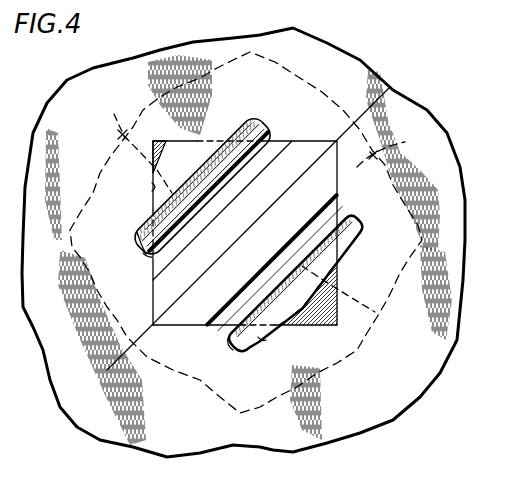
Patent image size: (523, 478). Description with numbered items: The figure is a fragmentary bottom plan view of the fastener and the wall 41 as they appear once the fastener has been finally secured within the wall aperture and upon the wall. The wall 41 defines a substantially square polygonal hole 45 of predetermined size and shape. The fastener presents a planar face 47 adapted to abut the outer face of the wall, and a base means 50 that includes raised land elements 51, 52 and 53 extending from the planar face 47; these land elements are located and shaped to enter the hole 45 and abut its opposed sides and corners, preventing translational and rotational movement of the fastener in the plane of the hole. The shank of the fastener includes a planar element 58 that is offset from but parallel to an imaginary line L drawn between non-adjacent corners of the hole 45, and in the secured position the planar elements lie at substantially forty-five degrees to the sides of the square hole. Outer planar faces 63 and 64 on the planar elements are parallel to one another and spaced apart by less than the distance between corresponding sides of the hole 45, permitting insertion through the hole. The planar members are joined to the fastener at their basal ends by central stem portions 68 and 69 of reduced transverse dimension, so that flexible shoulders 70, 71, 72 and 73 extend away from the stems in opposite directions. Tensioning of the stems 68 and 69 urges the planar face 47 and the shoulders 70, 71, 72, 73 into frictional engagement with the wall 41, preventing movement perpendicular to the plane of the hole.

The wall 41 is at (410, 373).
The polygonal hole 45 is at (150, 187).
The planar face 47 is at (252, 232).
The base means 50 is at (176, 280).
The raised land element 51 is at (270, 197).
The raised land element 52 is at (180, 169).
The raised land element 53 is at (323, 310).
The planar element 58 is at (203, 167).
The outer planar face 63 is at (134, 229).
The outer planar face 64 is at (260, 339).
The central stem portion 68 is at (135, 142).
The central stem portion 69 is at (361, 295).
The flexible shoulder 70 is at (255, 122).
The flexible shoulder 71 is at (143, 252).
The flexible shoulder 72 is at (357, 219).
The flexible shoulder 73 is at (225, 347).
The imaginary line L is at (248, 228).